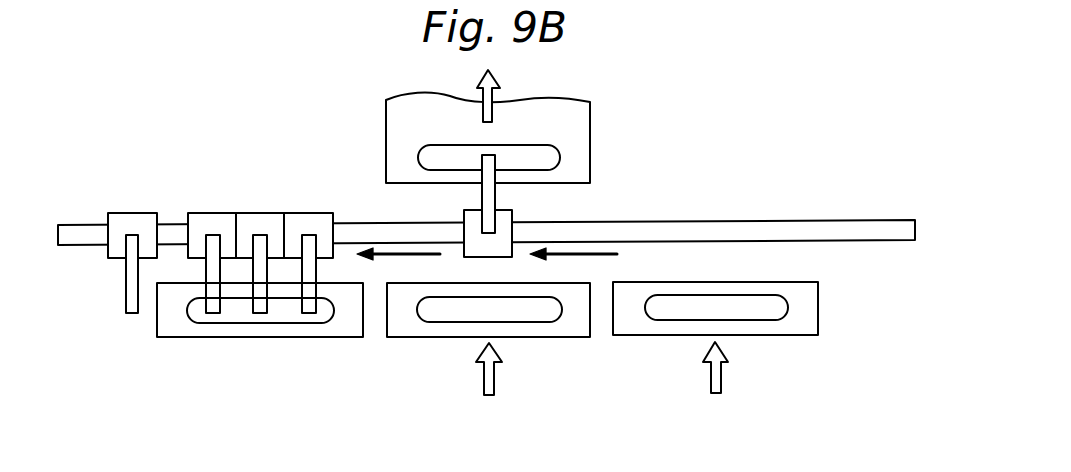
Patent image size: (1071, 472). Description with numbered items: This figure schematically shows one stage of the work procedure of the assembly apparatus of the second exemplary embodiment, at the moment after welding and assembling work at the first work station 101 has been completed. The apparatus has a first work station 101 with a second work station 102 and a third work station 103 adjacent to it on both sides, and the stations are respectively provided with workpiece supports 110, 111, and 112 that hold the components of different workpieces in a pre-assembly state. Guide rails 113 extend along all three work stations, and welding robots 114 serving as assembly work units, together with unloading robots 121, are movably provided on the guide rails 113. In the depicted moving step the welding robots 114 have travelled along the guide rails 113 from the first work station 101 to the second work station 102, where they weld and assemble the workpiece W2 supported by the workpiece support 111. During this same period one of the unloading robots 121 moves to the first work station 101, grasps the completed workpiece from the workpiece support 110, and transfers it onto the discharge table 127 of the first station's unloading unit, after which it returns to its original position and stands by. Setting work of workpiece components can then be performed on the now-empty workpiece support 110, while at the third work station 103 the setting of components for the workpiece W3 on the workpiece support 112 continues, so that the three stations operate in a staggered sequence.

The first work station 101 is at (484, 360).
The second work station 102 is at (255, 361).
The third work station 103 is at (713, 358).
The workpiece support 110 is at (410, 339).
The workpiece support 111 is at (177, 339).
The workpiece support 112 is at (637, 337).
The guide rails 113 is at (697, 226).
The welding robots 114 is at (208, 216).
The unloading robots 121 is at (131, 216).
The discharge table 127 is at (591, 118).
The workpiece W2 is at (312, 324).
The workpiece W3 is at (770, 321).